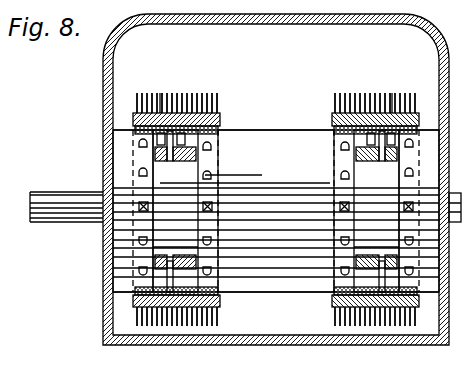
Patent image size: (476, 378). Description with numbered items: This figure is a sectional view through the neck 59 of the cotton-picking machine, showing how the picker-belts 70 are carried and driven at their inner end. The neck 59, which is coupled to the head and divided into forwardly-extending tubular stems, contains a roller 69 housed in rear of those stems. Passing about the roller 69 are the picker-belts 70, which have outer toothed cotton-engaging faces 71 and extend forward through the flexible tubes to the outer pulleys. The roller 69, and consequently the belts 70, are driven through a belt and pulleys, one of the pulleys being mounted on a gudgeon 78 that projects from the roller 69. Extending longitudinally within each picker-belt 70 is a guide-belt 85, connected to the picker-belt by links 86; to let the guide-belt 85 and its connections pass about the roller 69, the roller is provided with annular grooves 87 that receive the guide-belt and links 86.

The neck 59 is at (282, 179).
The roller 69 is at (276, 211).
The picker-belts 70 is at (221, 118).
The toothed cotton-engaging faces 71 is at (170, 95).
The gudgeon 78 is at (70, 186).
The guide-belt 85 is at (198, 152).
The links 86 is at (276, 211).
The annular grooves 87 is at (276, 211).